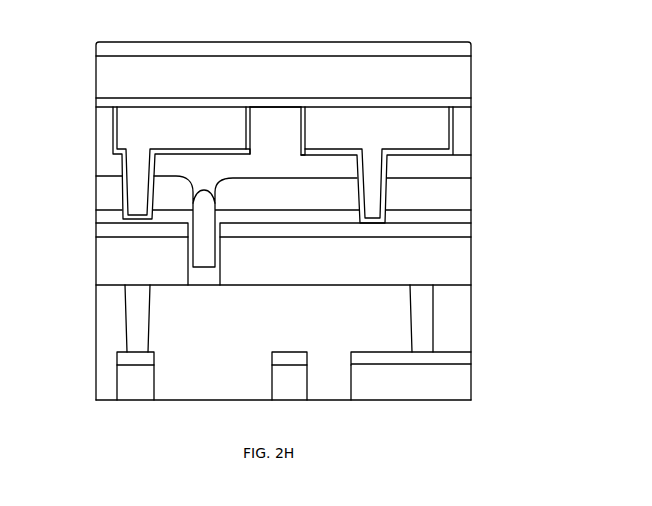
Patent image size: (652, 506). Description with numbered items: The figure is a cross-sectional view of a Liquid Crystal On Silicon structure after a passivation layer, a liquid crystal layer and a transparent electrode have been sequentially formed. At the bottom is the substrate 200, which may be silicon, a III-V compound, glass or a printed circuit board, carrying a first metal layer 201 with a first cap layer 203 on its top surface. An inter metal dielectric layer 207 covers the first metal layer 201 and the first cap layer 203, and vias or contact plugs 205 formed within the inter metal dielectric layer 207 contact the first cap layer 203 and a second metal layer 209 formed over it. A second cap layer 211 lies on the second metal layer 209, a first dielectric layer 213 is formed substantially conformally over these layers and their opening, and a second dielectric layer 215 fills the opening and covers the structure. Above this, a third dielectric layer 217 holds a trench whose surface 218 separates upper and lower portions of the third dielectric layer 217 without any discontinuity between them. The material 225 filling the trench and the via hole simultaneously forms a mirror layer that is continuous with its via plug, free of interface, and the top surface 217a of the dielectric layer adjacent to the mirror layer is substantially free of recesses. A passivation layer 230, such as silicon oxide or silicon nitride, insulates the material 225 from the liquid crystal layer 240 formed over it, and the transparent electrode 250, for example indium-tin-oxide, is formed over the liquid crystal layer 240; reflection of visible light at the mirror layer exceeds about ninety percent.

The substrate 200 is at (546, 27).
The first metal layer 201 is at (462, 381).
The first cap layer 203 is at (462, 358).
The vias or contact plugs 205 is at (422, 328).
The inter metal dielectric layer 207 is at (402, 300).
The second metal layer 209 is at (462, 263).
The second cap layer 211 is at (462, 230).
The first dielectric layer 213 is at (243, 217).
The second dielectric layer 215 is at (324, 190).
The third dielectric layer 217 is at (270, 118).
The top surface of the dielectric layer 217a is at (277, 97).
The surface of the trench 218 is at (308, 162).
The material 225 is at (221, 114).
The passivation layer 230 is at (474, 99).
The liquid crystal layer 240 is at (463, 74).
The transparent electrode 250 is at (466, 48).